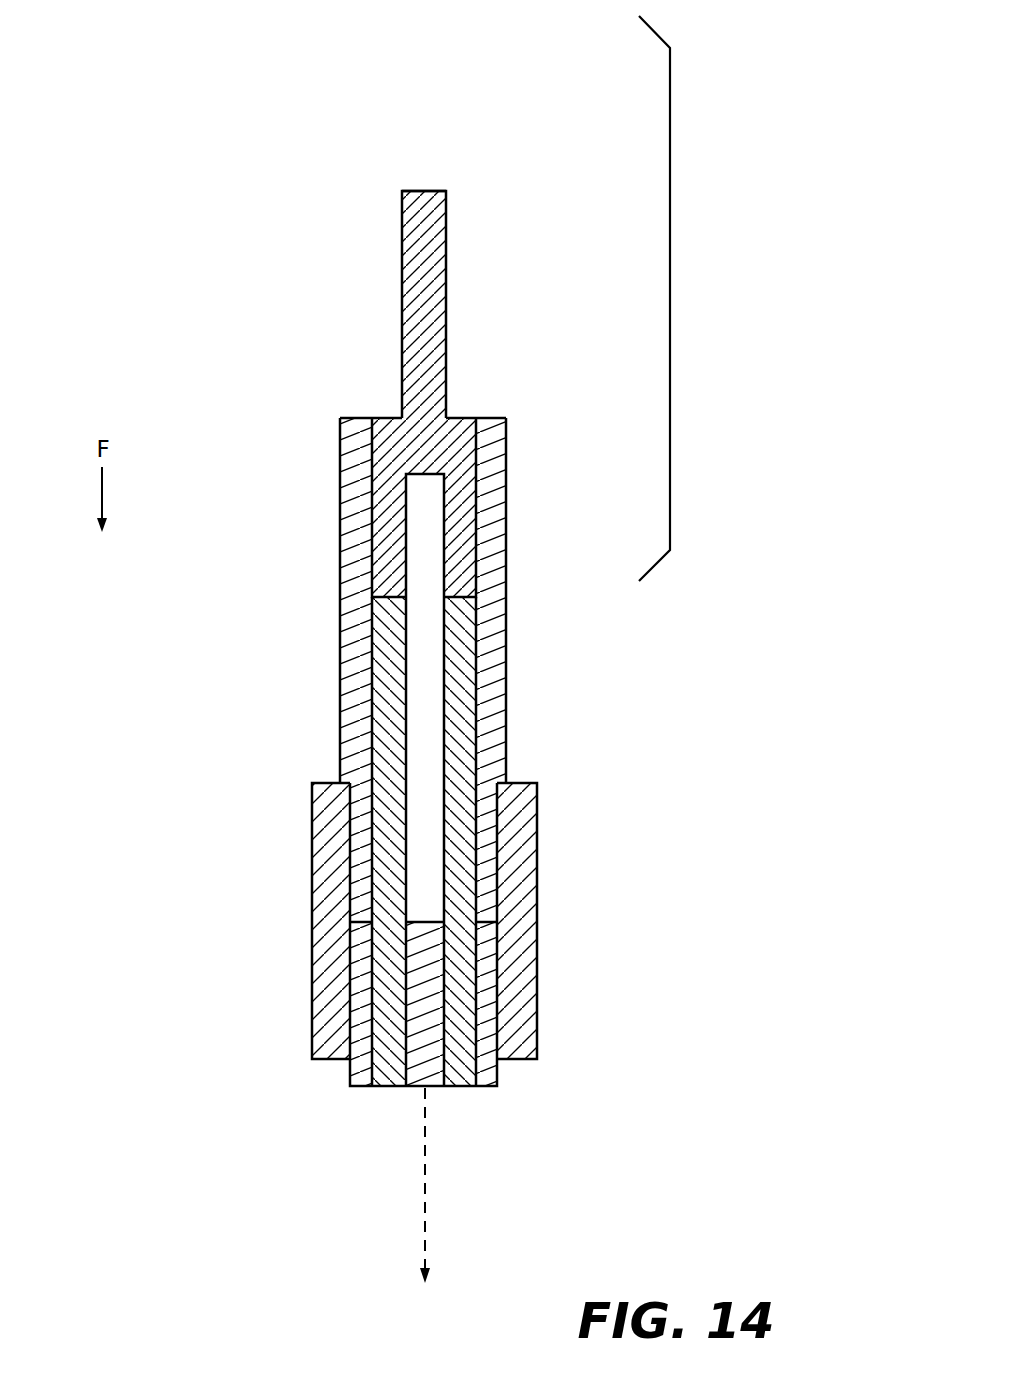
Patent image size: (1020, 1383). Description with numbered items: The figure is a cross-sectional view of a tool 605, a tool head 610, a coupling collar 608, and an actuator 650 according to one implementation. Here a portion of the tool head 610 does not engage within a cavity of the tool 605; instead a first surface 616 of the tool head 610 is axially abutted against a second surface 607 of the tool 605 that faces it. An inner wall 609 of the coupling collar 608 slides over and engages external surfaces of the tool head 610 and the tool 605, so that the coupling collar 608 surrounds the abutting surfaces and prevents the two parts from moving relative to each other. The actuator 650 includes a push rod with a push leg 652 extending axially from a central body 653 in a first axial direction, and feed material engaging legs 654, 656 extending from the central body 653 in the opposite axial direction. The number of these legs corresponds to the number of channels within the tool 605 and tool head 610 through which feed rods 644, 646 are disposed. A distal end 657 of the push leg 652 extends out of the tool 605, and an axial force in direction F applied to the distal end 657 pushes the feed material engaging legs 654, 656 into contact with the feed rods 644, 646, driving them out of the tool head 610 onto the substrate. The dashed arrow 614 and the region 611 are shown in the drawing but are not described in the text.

The actuator 650 is at (671, 295).
The push leg 652 is at (446, 345).
The distal end 657 is at (428, 191).
The central body 653 is at (465, 418).
The feed material engaging leg 654 is at (393, 563).
The feed material engaging leg 656 is at (460, 513).
The insulator sleeve 611 is at (385, 688).
The tool 605 is at (507, 687).
The inner wall 609 is at (362, 885).
The first surface 616 is at (488, 908).
The second surface 607 is at (360, 937).
The tool head 610 is at (497, 1018).
The coupling collar 608 is at (537, 928).
The feed rod 644 is at (388, 1088).
The feed rod 646 is at (460, 1088).
The insertion direction 614 is at (425, 1248).